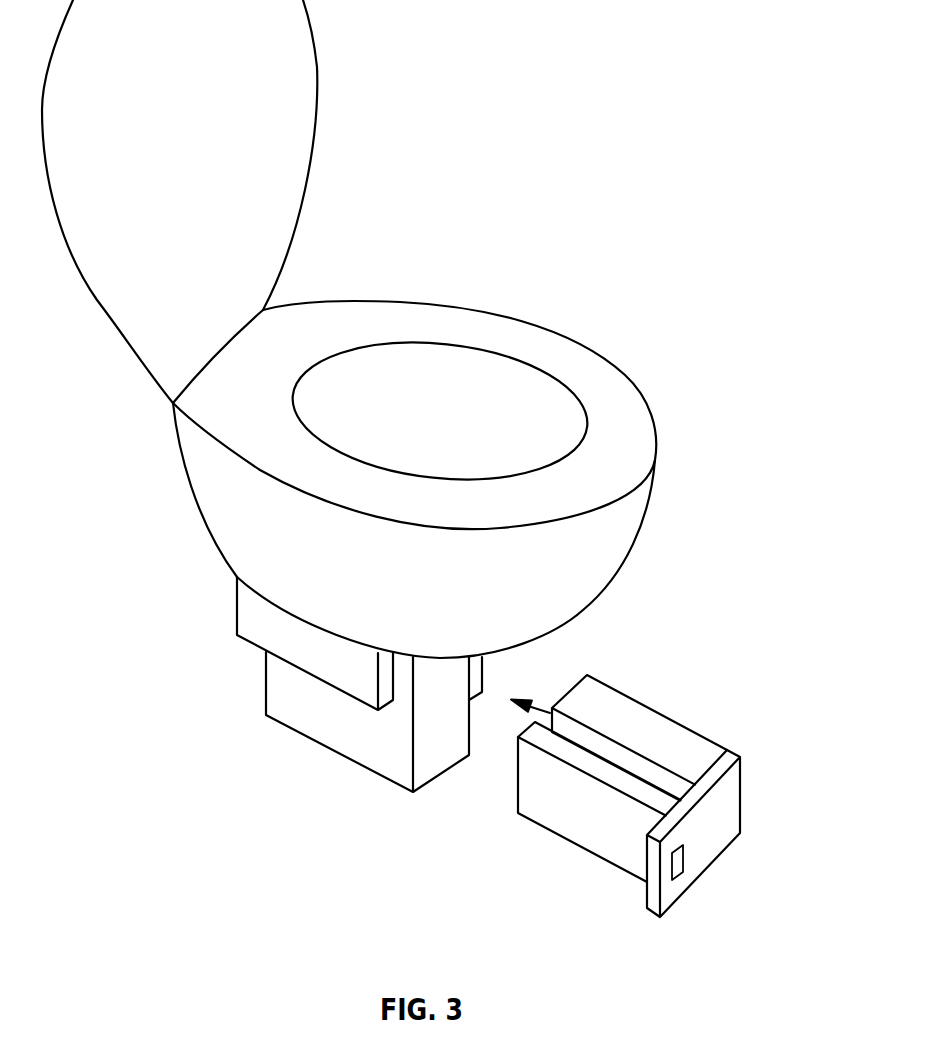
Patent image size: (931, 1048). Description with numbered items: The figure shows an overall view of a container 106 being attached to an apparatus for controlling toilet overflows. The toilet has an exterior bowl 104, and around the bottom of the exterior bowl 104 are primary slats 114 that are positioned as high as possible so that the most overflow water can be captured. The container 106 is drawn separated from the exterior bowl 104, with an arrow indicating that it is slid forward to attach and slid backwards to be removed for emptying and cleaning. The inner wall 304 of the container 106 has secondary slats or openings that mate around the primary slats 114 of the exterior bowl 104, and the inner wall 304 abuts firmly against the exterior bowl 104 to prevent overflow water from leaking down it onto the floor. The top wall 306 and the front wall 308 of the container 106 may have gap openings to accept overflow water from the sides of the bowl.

The exterior bowl 104 is at (197, 510).
The primary slats 114 is at (237, 605).
The container 106 is at (629, 799).
The inner wall 304 is at (567, 800).
The top wall 306 is at (657, 740).
The front wall 308 is at (702, 838).